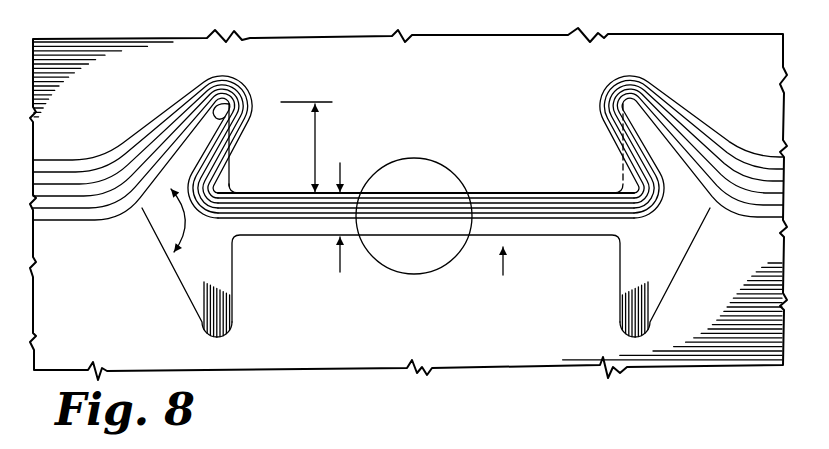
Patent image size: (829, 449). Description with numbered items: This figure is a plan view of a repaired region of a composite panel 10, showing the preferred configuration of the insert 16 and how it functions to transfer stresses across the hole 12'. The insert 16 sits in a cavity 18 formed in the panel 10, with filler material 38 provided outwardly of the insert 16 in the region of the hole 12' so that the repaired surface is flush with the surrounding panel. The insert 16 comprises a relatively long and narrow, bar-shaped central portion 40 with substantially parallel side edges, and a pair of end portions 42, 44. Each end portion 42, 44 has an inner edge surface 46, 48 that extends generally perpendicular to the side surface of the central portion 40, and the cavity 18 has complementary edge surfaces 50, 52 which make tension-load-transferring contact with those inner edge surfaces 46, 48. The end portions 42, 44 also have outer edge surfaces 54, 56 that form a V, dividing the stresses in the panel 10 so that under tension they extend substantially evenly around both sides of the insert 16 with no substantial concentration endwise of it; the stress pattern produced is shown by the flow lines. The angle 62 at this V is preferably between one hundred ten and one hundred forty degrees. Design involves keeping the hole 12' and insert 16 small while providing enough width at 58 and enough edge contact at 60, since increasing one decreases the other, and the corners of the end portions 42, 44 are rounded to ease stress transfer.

The composite panel 10 is at (494, 356).
The hole 12' is at (414, 191).
The insert 16 is at (510, 284).
The cavity 18 is at (298, 238).
The filler material 38 is at (424, 263).
The central portion 40 is at (489, 193).
The end portion 42 is at (192, 252).
The end portion 44 is at (683, 237).
The inner edge surface 46 is at (232, 172).
The inner edge surface 48 is at (621, 110).
The complementary edge surface 50 is at (231, 100).
The complementary edge surface 52 is at (630, 166).
The outer edge surface 54 is at (187, 136).
The outer edge surface 56 is at (663, 138).
The width of the insert 58 is at (340, 224).
The edge contact 60 is at (318, 146).
The angle 62 is at (175, 216).